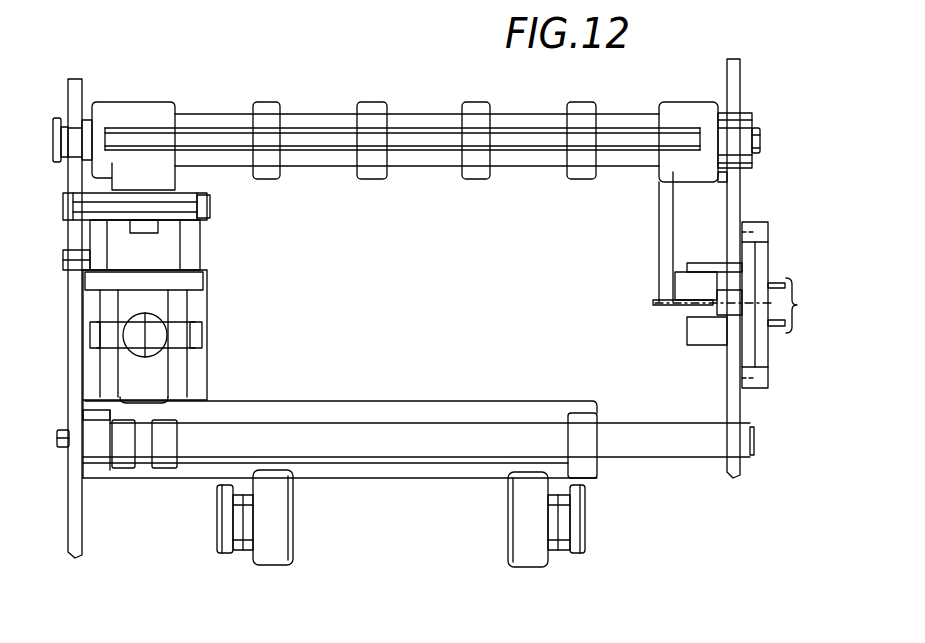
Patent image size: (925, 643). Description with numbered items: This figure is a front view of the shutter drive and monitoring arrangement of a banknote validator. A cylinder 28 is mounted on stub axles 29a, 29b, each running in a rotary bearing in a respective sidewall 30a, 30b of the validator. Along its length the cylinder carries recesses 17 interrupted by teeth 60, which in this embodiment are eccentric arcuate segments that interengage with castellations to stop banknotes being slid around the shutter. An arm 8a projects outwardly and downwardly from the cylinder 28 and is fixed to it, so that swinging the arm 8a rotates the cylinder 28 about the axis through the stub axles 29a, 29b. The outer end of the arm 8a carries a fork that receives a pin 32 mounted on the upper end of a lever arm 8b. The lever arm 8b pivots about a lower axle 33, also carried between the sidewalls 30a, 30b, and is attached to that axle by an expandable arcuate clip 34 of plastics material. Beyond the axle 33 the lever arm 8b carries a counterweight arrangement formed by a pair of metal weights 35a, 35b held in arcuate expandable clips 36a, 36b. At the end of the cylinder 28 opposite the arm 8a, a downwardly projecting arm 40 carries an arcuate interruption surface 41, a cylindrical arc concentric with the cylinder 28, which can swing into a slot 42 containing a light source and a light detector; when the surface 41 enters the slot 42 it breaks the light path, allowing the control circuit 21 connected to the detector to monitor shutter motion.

The arm 8a is at (180, 175).
The lever arm 8b is at (200, 255).
The recesses 17 is at (422, 170).
The control circuit 21 is at (802, 305).
The cylinder 28 is at (637, 114).
The stub axle 29a is at (56, 142).
The stub axle 29b is at (760, 142).
The sidewall 30a is at (80, 96).
The sidewall 30b is at (740, 68).
The pin 32 is at (210, 215).
The lower axle 33 is at (250, 447).
The expandable arcuate clip 34 is at (128, 468).
The metal weight 35a is at (273, 560).
The metal weight 35b is at (530, 553).
The arcuate expandable clip 36a is at (235, 555).
The arcuate expandable clip 36b is at (572, 510).
The downwardly projecting arm 40 is at (658, 230).
The arcuate interruption surface 41 is at (683, 293).
The slot 42 is at (718, 307).
The teeth 60 is at (357, 101).